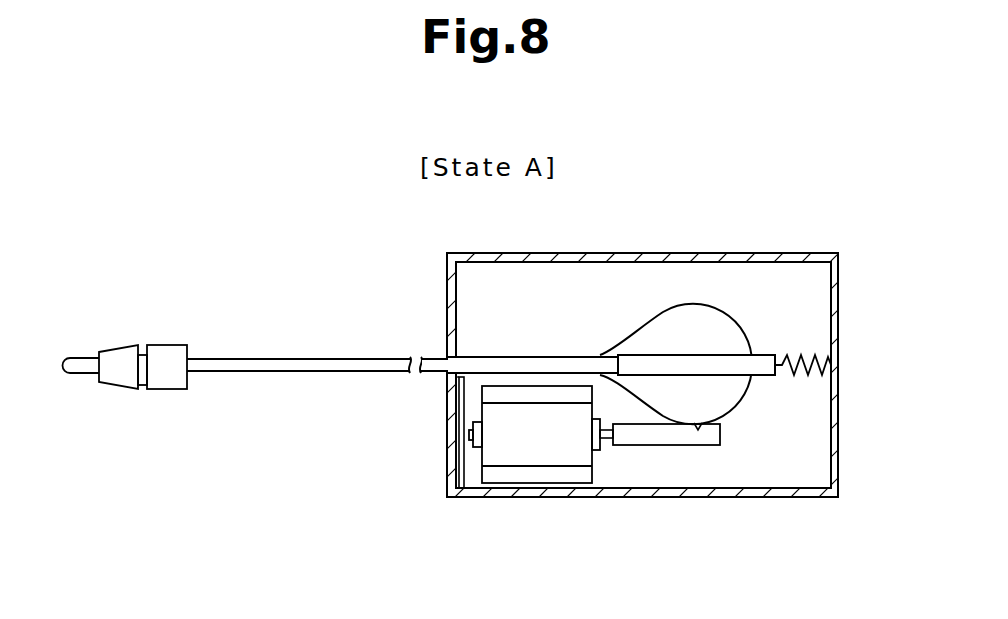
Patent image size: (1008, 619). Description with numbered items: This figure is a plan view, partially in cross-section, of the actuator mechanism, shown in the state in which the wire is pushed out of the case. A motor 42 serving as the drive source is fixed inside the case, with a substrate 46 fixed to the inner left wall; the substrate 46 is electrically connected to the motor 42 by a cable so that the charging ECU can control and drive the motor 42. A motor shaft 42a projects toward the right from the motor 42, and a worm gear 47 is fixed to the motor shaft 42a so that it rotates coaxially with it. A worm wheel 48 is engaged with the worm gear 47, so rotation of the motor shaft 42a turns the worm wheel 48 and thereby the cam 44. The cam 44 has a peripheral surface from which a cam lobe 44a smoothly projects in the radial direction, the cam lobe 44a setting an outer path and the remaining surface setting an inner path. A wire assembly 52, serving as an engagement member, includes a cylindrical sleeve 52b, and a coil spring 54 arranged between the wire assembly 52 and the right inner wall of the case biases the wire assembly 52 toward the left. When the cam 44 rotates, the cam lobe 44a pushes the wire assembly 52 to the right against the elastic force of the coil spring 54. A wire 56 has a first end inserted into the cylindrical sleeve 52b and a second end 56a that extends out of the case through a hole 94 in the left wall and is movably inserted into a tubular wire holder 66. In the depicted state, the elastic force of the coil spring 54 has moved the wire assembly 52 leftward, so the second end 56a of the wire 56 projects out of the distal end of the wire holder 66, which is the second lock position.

The motor 42 is at (502, 456).
The motor shaft 42a is at (602, 432).
The cam 44 is at (660, 318).
The cam lobe 44a is at (601, 353).
The substrate 46 is at (460, 430).
The worm gear 47 is at (630, 446).
The worm wheel 48 is at (698, 423).
The wire assembly 52 is at (740, 372).
The cylindrical sleeve 52b is at (765, 354).
The coil spring 54 is at (828, 366).
The wire 56 is at (250, 362).
The second end 56a is at (84, 358).
The wire holder 66 is at (172, 350).
The hole 94 is at (447, 364).